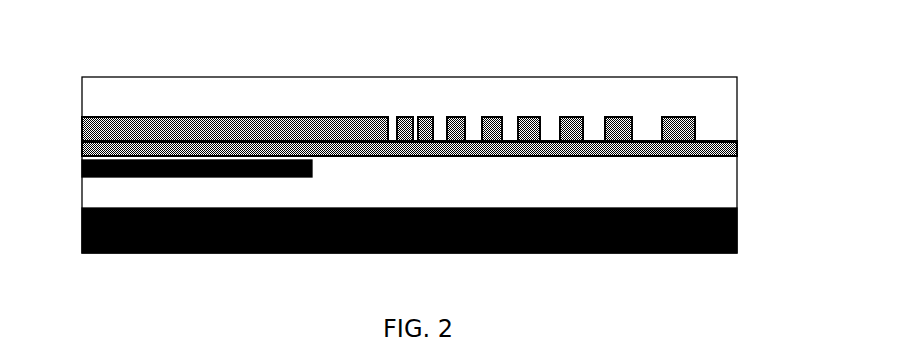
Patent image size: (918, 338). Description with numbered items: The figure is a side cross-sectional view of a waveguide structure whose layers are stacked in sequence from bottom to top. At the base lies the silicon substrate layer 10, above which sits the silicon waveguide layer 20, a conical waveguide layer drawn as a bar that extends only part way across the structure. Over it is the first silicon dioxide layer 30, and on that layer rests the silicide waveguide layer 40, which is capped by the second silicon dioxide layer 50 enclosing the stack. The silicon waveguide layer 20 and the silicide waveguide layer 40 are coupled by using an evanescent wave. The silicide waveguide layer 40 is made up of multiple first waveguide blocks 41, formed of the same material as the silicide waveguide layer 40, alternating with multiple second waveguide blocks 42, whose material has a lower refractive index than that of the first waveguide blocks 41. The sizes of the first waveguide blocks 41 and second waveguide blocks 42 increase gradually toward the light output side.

The silicon substrate layer 10 is at (82, 206).
The silicon waveguide layer 20 is at (82, 168).
The first silicon dioxide layer 30 is at (82, 146).
The silicide waveguide layer 40 is at (411, 106).
The first waveguide blocks 41 is at (697, 122).
The second waveguide blocks 42 is at (715, 132).
The second silicon dioxide layer 50 is at (123, 91).